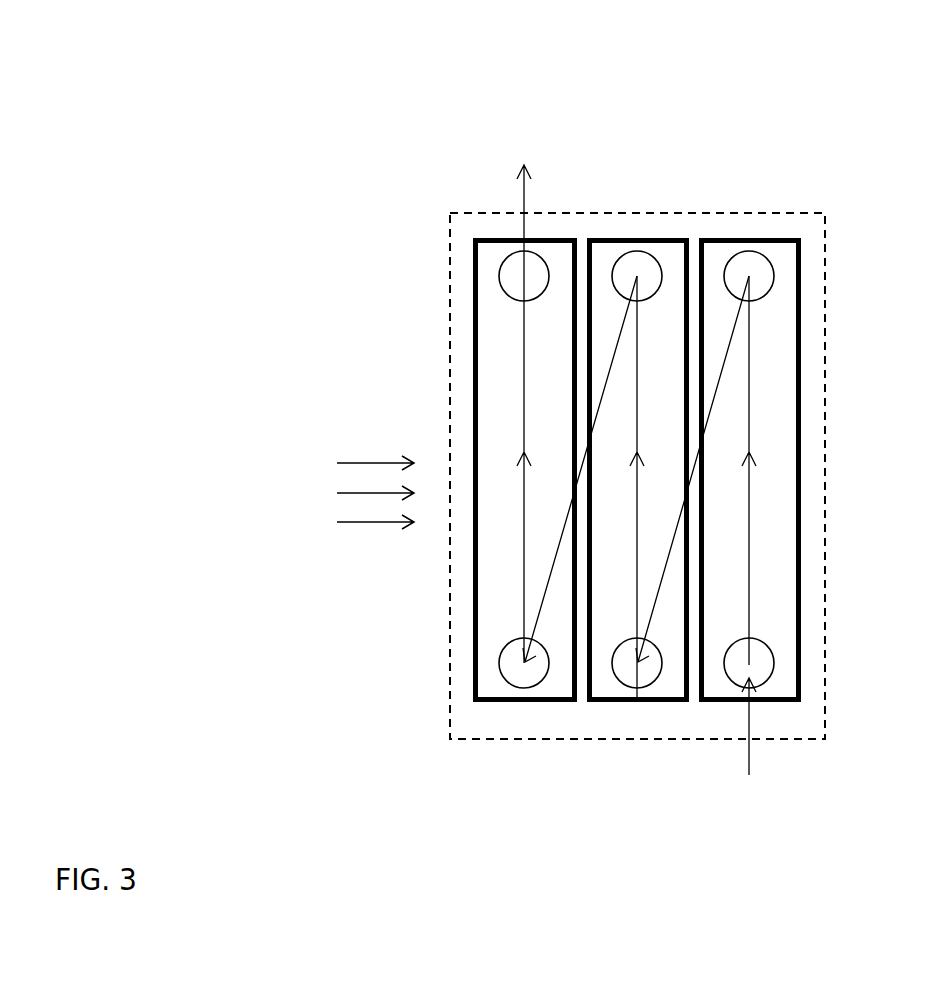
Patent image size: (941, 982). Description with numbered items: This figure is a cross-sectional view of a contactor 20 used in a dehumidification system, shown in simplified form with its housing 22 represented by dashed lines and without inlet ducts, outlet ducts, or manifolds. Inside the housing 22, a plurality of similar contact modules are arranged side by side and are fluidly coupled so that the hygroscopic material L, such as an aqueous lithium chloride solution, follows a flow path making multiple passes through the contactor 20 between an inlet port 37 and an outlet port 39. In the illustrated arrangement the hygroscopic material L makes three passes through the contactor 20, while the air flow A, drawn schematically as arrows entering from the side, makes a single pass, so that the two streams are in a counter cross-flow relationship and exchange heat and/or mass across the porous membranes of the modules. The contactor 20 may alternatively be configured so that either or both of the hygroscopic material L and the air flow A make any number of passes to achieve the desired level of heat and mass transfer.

The contactor 20 is at (348, 156).
The housing 22 is at (725, 212).
The inlet port 37 is at (774, 654).
The outlet port 39 is at (775, 275).